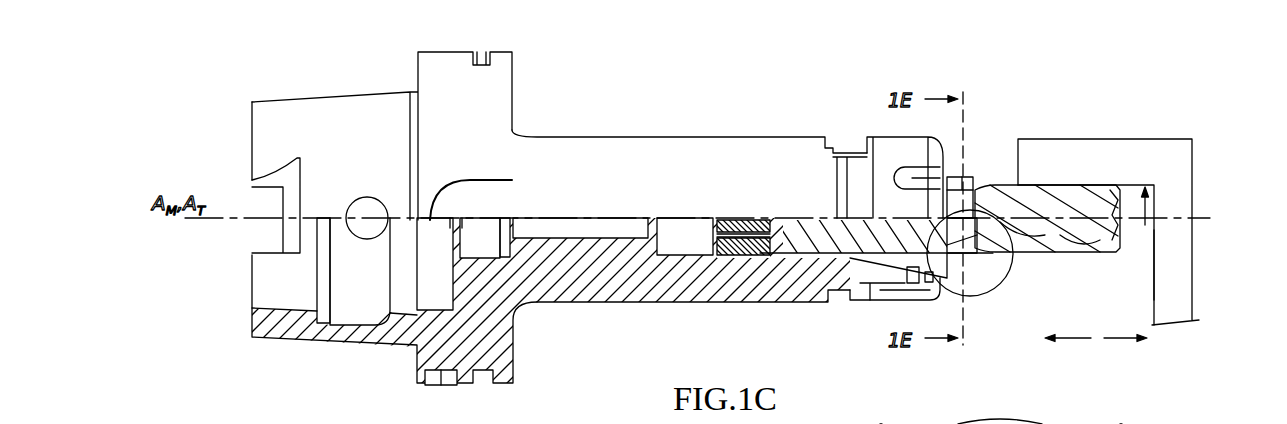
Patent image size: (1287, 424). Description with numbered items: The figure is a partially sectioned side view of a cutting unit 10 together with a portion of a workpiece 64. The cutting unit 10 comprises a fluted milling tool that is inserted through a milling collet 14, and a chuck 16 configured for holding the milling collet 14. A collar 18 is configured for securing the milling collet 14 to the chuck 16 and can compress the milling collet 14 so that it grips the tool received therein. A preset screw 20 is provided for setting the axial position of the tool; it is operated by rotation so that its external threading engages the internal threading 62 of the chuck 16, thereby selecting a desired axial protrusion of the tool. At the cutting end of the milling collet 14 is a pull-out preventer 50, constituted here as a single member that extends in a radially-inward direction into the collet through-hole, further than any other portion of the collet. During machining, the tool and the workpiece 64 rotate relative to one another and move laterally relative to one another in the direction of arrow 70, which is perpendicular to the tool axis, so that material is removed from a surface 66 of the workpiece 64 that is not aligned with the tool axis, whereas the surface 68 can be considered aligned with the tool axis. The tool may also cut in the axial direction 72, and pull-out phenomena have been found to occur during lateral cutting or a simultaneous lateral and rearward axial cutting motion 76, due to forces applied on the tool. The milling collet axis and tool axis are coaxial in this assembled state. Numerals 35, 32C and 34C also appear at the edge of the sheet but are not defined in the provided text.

The cutting unit 10 is at (256, 74).
The milling collet 14 is at (968, 178).
The chuck 16 is at (636, 150).
The collar 18 is at (882, 145).
The preset screw 20 is at (742, 220).
The internal threading 62 is at (741, 258).
The pull-out preventer 50 is at (983, 273).
The workpiece 64 is at (1181, 122).
The surface 66 is at (1133, 186).
The surface 68 is at (1165, 248).
The arrow 70 is at (1147, 210).
The axial direction 72 is at (1110, 336).
The rearward axial cutting motion 76 is at (1090, 336).
The flute 35 is at (947, 423).
The cutting edge 32C is at (868, 414).
The cutting edge 34C is at (1134, 418).